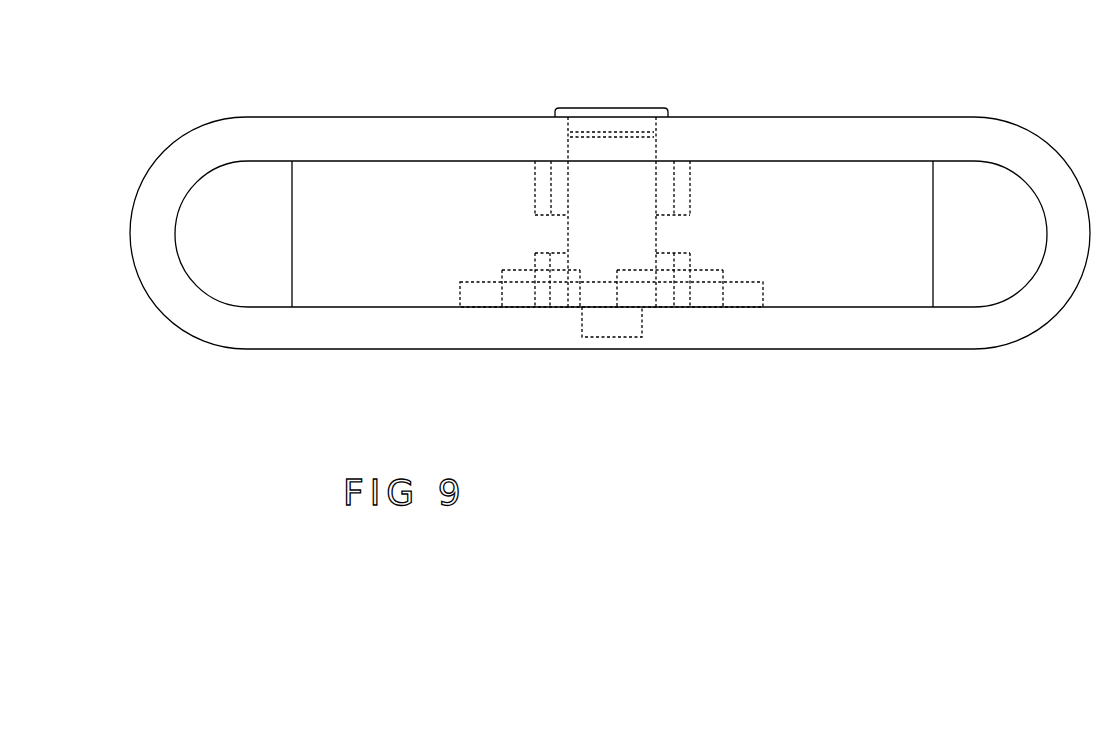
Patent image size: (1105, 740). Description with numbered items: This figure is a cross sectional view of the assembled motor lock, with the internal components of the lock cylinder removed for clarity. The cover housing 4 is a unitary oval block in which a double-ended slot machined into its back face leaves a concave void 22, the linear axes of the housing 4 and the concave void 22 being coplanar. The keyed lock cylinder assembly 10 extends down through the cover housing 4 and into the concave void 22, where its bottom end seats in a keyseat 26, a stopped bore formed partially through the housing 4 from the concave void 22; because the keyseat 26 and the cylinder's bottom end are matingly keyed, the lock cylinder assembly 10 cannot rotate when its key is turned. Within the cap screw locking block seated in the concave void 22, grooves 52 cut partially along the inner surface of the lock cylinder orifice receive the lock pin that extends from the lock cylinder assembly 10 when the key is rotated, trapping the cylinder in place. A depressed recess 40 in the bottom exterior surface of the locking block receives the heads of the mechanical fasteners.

The cover housing 4 is at (953, 120).
The concave void 22 is at (1000, 252).
The lock cylinder assembly 10 is at (632, 180).
The grooves 52 is at (545, 190).
The depressed recess 40 is at (747, 293).
The keyseat 26 is at (617, 317).